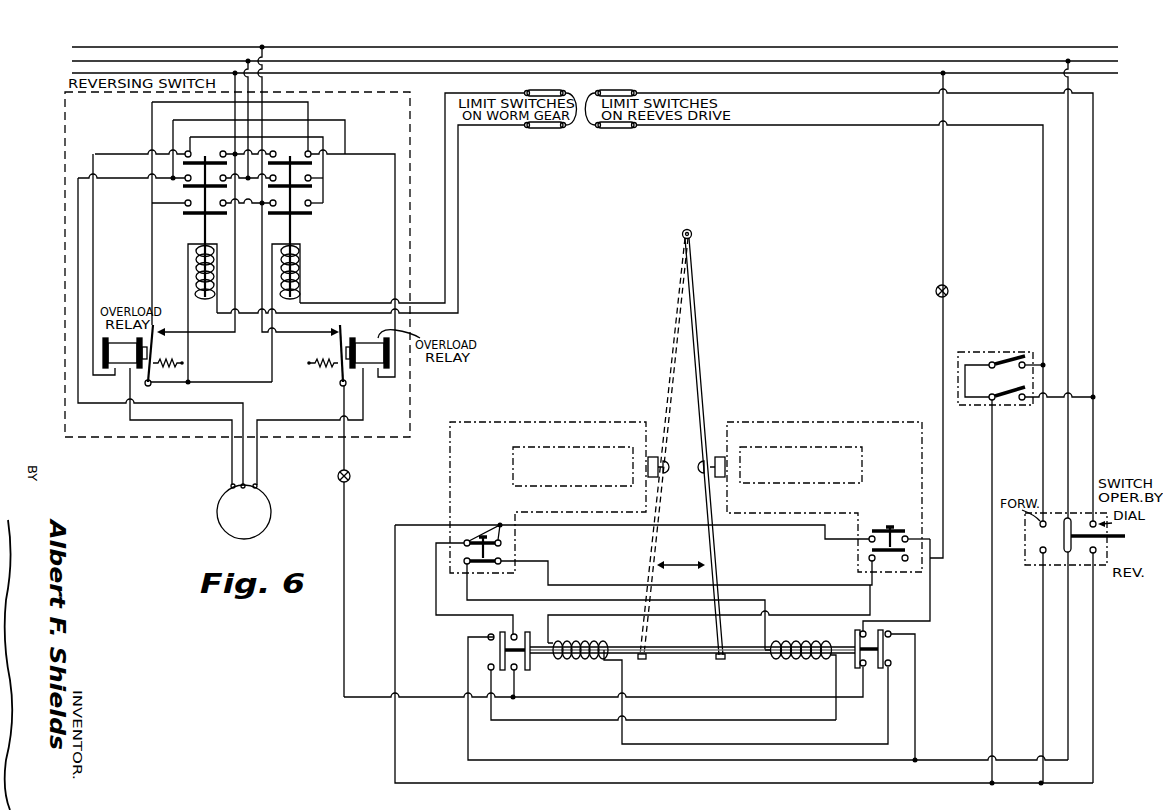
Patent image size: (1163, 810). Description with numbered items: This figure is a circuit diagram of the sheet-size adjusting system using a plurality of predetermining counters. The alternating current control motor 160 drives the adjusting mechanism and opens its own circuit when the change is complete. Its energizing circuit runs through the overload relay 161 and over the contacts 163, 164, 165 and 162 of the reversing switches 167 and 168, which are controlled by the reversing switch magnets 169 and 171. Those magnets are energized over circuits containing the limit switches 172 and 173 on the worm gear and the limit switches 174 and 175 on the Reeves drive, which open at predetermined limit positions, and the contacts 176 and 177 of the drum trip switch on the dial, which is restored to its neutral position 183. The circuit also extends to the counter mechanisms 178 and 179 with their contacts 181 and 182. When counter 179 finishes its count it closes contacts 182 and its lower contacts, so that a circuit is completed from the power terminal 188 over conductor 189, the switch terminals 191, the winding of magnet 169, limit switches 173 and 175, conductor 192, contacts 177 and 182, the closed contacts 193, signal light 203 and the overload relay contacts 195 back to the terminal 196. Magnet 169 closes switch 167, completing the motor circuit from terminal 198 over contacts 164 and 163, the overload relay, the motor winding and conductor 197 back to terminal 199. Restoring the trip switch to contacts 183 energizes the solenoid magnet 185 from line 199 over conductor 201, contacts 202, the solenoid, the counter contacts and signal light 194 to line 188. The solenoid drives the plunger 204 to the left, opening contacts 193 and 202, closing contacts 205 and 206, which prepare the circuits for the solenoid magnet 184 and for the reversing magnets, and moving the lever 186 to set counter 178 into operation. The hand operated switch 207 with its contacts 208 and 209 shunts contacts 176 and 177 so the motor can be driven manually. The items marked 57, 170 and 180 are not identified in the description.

The dial shaft 57 is at (1124, 536).
The alternating current control motor 160 is at (217, 508).
The overload relay 161 is at (117, 372).
The reversing switch contact 162 is at (311, 152).
The reversing switch contact 163 is at (187, 150).
The reversing switch contact 164 is at (223, 150).
The reversing switch contact 165 is at (273, 150).
The reversing switch 167 is at (202, 147).
The reversing switch 168 is at (287, 147).
The reversing switch magnet 169 is at (195, 268).
The overload relay 170 is at (371, 370).
The reversing switch magnet 171 is at (303, 266).
The limit switch on the worm gear 172 is at (558, 88).
The limit switch on the worm gear 173 is at (529, 128).
The limit switch on the Reeves 174 is at (601, 89).
The limit switch on the Reeves 175 is at (601, 128).
The drum trip switch contact 176 is at (1097, 550).
The drum trip switch contact 177 is at (1038, 536).
The counter mechanism 178 is at (492, 426).
The counter mechanism 179 is at (795, 425).
The switch contacts 180 is at (905, 561).
The counter contacts 181 is at (500, 523).
The counter contacts 182 is at (905, 528).
The drum trip switch neutral contacts 183 is at (1064, 553).
The solenoid magnet 184 is at (800, 660).
The solenoid magnet 185 is at (577, 661).
The lever 186 is at (702, 347).
The power terminal 188 is at (68, 73).
The conductor 189 is at (235, 238).
The switch terminals 191 is at (165, 335).
The conductor 192 is at (780, 125).
The contacts 193 is at (858, 634).
The signal light 194 is at (936, 297).
The overload relay contacts 195 is at (332, 337).
The power supply terminal 196 is at (68, 47).
The conductor 197 is at (245, 413).
The power supply terminal 198 is at (170, 177).
The power supply terminal 199 is at (68, 61).
The conductor 201 is at (1073, 83).
The contacts 202 is at (891, 661).
The signal light 203 is at (338, 481).
The plunger 204 is at (678, 656).
The contacts 205 is at (488, 666).
The contacts 206 is at (517, 669).
The hand operated switch 207 is at (984, 386).
The contacts 208 is at (1011, 404).
The contacts 209 is at (1011, 366).